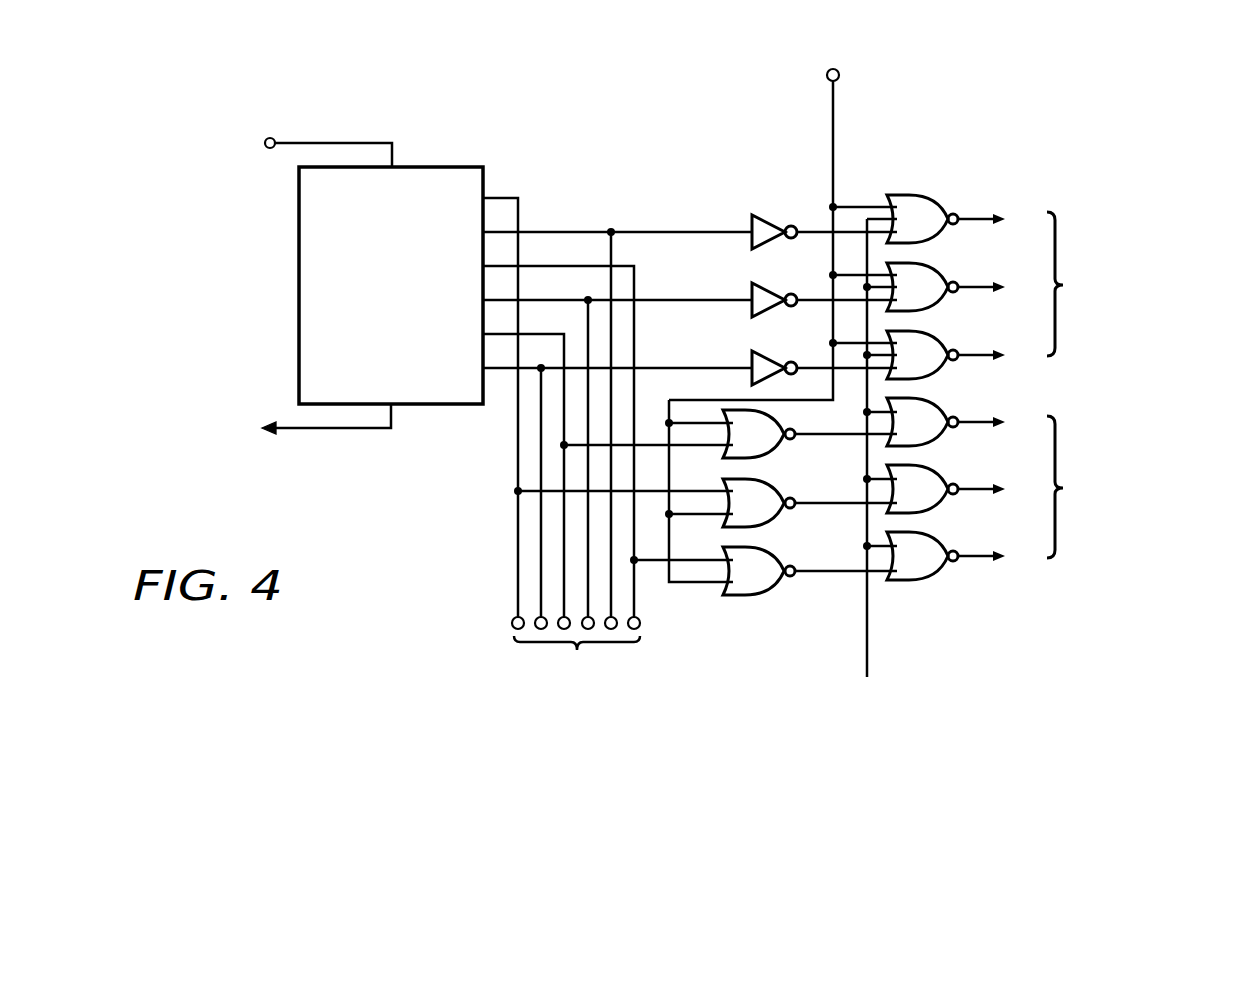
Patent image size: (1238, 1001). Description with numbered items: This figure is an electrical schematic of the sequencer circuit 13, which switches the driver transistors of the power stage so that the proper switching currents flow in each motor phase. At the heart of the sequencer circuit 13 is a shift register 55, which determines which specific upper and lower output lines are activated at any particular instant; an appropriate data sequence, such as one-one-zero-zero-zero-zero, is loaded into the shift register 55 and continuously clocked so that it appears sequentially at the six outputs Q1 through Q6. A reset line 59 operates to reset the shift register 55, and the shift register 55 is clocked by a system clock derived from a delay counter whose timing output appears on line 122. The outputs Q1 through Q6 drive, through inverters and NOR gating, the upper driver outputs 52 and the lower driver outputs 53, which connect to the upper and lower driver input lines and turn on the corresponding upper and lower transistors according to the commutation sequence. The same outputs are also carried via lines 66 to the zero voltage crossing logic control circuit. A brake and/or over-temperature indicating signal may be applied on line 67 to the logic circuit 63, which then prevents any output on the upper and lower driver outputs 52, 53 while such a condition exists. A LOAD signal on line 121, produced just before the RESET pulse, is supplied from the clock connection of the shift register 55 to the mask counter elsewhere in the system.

The sequencer circuit 13 is at (532, 136).
The shift register 55 is at (299, 279).
The reset line 59 is at (334, 143).
The load signal line 121 is at (336, 430).
The brake line 67 is at (833, 161).
The logic circuit 63 is at (912, 173).
The upper driver outputs 52 is at (1008, 184).
The lower driver outputs 53 is at (1000, 578).
The lines 66 is at (470, 586).
The delay counter output line 122 is at (869, 647).